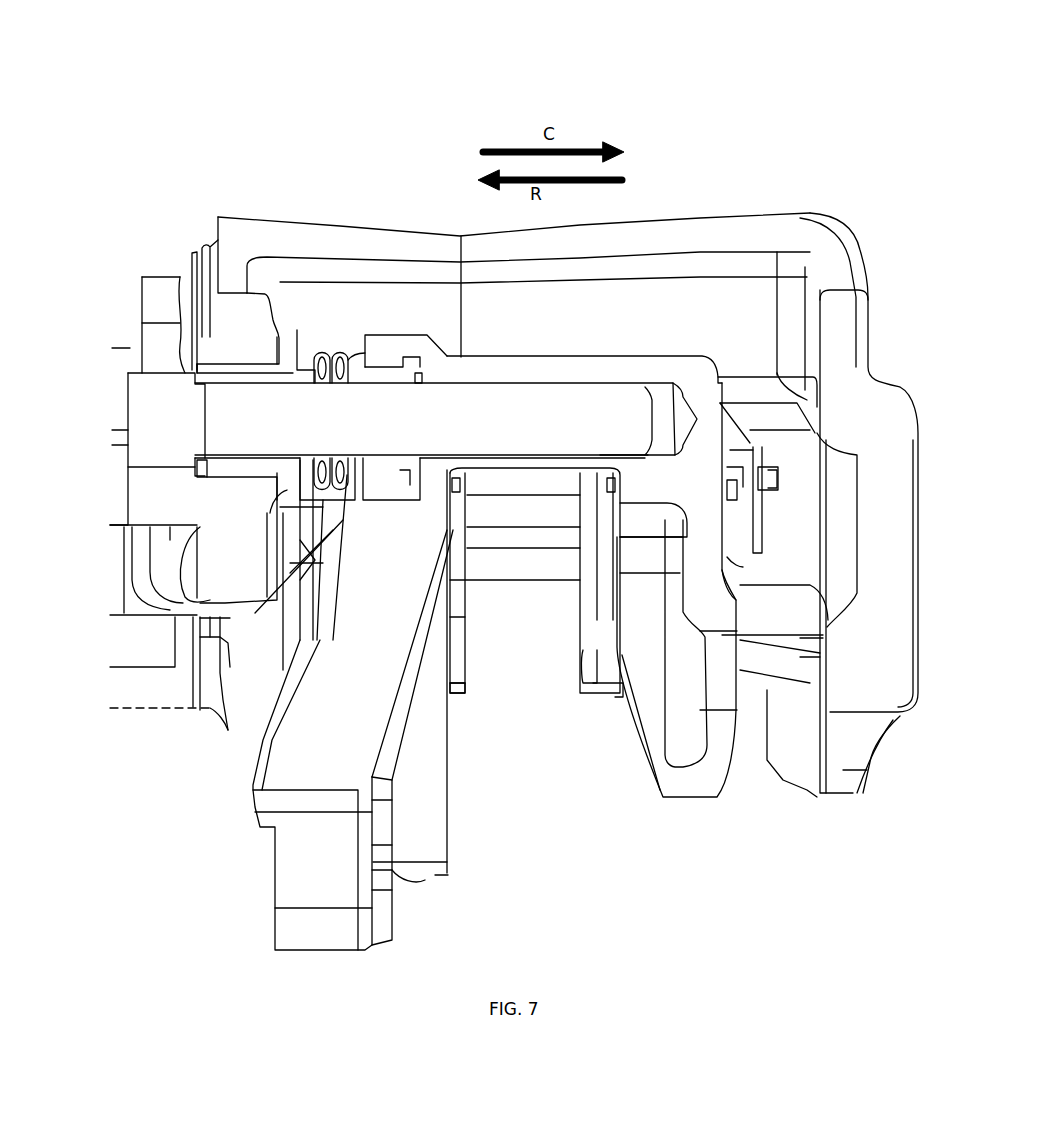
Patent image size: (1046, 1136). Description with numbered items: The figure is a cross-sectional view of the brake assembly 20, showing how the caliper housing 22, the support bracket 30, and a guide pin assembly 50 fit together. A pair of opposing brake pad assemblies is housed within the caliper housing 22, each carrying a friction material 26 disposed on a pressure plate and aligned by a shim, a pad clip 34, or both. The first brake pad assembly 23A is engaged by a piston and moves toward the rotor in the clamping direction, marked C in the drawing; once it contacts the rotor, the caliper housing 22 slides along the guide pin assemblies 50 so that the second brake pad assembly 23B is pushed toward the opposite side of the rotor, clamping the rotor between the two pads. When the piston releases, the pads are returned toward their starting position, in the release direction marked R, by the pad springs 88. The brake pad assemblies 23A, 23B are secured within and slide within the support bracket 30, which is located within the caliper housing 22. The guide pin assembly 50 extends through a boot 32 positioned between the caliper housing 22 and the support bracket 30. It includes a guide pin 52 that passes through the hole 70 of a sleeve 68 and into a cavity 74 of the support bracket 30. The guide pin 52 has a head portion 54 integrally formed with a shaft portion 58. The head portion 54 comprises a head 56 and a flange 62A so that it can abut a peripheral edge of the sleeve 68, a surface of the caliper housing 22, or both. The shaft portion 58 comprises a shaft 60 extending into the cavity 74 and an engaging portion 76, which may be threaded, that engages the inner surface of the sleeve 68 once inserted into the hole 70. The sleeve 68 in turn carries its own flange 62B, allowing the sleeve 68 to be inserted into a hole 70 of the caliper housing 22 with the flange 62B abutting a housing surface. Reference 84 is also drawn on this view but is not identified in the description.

The brake assembly 20 is at (766, 76).
The caliper housing 22 is at (305, 243).
The first brake pad assembly 23A is at (472, 688).
The second brake pad assembly 23B is at (590, 697).
The friction material 26 is at (588, 605).
The support bracket 30 is at (303, 873).
The boot 32 is at (343, 357).
The pad clip 34 is at (780, 484).
The guide pin assembly 50 is at (104, 338).
The guide pin 52 is at (488, 372).
The head portion 54 is at (117, 455).
The head 56 is at (137, 417).
The shaft portion 58 is at (630, 456).
The shaft 60 is at (560, 412).
The flange 62A is at (190, 345).
The flange 62B is at (290, 357).
The sleeve 68 is at (218, 478).
The hole 70 is at (205, 368).
The cavity 74 is at (669, 383).
The engaging portion 76 is at (237, 440).
The fork arm 84 is at (273, 487).
The pad spring 88 is at (313, 562).